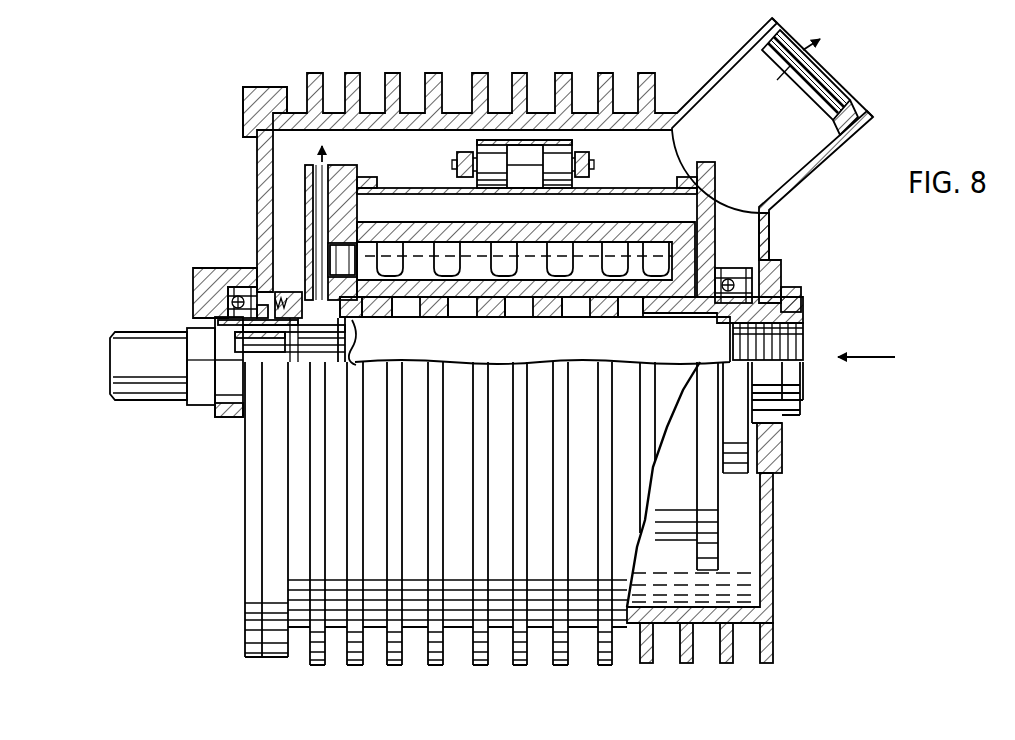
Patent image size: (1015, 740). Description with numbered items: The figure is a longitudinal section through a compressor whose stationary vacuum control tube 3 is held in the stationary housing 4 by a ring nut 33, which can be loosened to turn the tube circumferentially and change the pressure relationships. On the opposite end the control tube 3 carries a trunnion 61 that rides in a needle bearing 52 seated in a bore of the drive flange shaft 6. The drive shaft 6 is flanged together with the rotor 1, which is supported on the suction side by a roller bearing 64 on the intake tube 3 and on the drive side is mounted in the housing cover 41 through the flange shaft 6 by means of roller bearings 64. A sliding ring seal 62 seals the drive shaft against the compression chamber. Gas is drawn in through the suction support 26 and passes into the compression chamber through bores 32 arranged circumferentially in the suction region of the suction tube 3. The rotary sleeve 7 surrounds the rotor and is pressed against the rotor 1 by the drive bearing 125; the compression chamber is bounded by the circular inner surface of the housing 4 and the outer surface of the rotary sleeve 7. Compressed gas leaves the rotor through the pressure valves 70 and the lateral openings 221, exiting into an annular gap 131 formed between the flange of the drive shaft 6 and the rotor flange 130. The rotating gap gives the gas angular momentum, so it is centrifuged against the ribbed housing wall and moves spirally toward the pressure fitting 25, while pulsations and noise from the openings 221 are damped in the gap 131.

The rotor 1 is at (620, 230).
The vacuum control tube 3 is at (670, 308).
The stationary housing 4 is at (447, 113).
The drive flange shaft 6 is at (143, 348).
The rotary sleeve 7 is at (627, 188).
The pressure fitting 25 is at (840, 113).
The suction support 26 is at (807, 328).
The bores 32 is at (528, 310).
The ring nut 33 is at (793, 285).
The housing cover 41 is at (248, 113).
The needle bearing 52 is at (360, 352).
The trunnion 61 is at (243, 407).
The sliding ring seal 62 is at (290, 300).
The roller bearings 64 is at (230, 290).
The pressure valves 70 is at (503, 260).
The drive bearing 125 is at (563, 160).
The rotor flange 130 is at (705, 165).
The annular gap 131 is at (318, 177).
The openings 221 is at (333, 257).